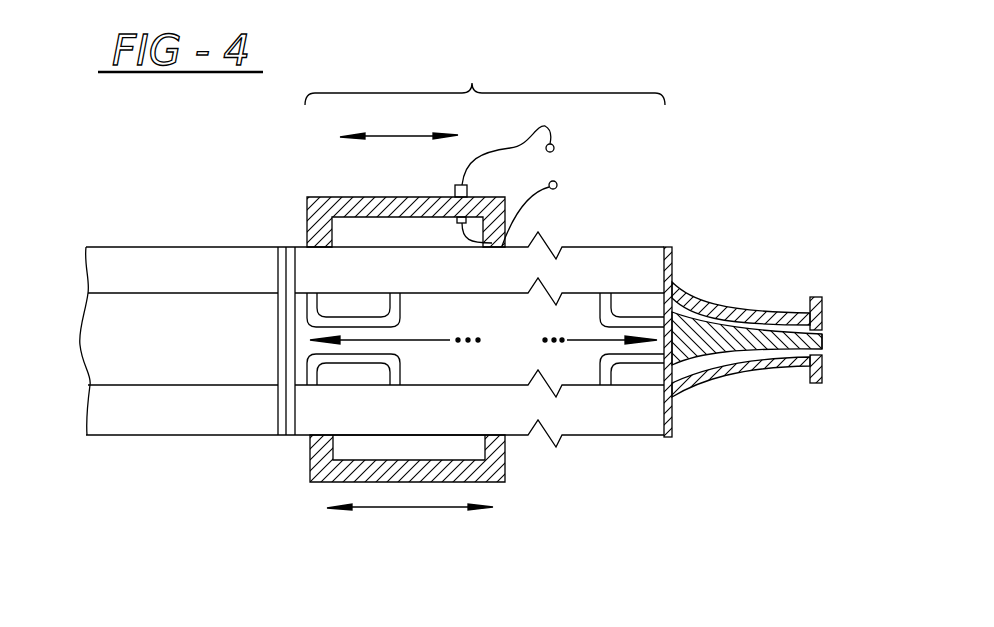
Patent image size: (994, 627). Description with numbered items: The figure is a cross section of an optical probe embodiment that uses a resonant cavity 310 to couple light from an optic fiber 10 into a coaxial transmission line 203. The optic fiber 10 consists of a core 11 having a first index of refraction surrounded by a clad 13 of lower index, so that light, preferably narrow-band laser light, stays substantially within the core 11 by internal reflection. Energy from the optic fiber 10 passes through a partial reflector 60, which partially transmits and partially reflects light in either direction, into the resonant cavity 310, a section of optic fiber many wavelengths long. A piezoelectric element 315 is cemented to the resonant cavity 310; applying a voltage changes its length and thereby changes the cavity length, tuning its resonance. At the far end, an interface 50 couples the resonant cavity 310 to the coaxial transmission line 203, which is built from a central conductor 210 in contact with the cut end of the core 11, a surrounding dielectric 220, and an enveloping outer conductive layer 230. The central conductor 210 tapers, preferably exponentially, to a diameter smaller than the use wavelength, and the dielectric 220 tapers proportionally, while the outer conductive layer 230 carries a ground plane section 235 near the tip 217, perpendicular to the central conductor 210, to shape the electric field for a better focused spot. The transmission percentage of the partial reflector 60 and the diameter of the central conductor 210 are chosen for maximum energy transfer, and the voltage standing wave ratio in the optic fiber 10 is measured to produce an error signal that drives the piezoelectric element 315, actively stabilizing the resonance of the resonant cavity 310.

The optic fiber 10 is at (190, 240).
The core 11 is at (76, 353).
The clad 13 is at (74, 266).
The partial reflector 60 is at (272, 441).
The resonant cavity 310 is at (557, 152).
The piezoelectric element 315 is at (508, 489).
The interface 50 is at (665, 448).
The central conductor 210 is at (691, 313).
The dielectric 220 is at (740, 328).
The outer conductive layer 230 is at (733, 377).
The ground plane section 235 is at (814, 297).
The tip 217 is at (826, 336).
The coaxial transmission line 203 is at (831, 364).